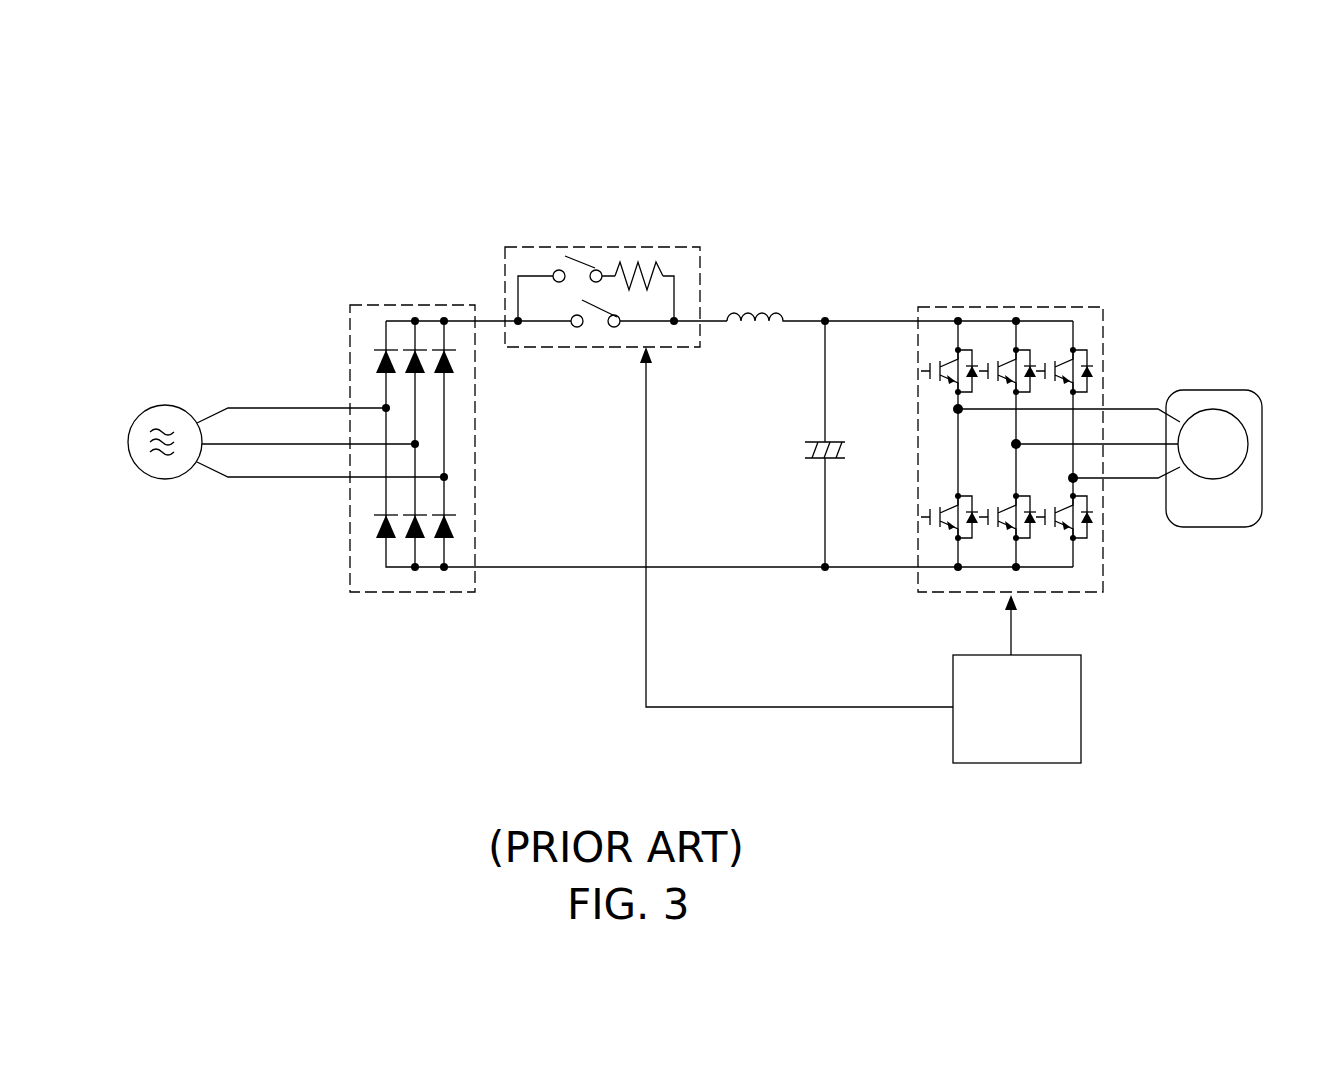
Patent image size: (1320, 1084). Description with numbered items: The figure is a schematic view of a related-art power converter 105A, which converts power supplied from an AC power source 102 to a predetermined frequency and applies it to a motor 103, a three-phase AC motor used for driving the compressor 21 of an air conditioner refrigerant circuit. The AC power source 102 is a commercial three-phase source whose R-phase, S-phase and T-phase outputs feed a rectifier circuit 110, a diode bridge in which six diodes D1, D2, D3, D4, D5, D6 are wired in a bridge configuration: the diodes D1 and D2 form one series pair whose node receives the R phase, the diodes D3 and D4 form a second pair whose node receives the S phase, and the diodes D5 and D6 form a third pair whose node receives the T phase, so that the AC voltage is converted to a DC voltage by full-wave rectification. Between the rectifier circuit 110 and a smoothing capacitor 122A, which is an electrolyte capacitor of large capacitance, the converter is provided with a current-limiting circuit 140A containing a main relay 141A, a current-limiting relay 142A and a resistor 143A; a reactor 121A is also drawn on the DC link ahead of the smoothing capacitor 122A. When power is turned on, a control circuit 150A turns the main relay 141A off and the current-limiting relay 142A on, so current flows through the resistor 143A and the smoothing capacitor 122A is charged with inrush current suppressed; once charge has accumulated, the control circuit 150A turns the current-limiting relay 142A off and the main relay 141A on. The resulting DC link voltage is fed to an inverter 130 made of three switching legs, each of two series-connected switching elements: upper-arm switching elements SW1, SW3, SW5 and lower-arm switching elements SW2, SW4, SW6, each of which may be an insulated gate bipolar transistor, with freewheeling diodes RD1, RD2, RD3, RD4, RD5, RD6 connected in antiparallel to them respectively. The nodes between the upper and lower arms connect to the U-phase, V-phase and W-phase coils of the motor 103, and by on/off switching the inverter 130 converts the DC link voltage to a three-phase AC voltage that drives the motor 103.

The power converter 105A is at (1147, 167).
The AC power source 102 is at (165, 472).
The rectifier circuit 110 is at (703, 424).
The diode D1 is at (388, 356).
The diode D2 is at (379, 540).
The diode D3 is at (414, 356).
The diode D4 is at (406, 540).
The diode D5 is at (452, 354).
The diode D6 is at (438, 540).
The current-limiting circuit 140A is at (616, 297).
The main relay 141A is at (598, 328).
The current-limiting relay 142A is at (585, 258).
The resistor 143A is at (655, 263).
The reactor (inductor) 121A is at (728, 335).
The smoothing capacitor 122A is at (810, 462).
The inverter 130 is at (1013, 433).
The switching element SW1 is at (929, 368).
The switching element SW2 is at (929, 518).
The switching element SW3 is at (987, 368).
The switching element SW4 is at (988, 510).
The switching element SW5 is at (1044, 368).
The switching element SW6 is at (1056, 518).
The freewheeling diode RD1 is at (974, 365).
The freewheeling diode RD2 is at (972, 517).
The freewheeling diode RD3 is at (1032, 365).
The freewheeling diode RD4 is at (1033, 517).
The freewheeling diode RD5 is at (1089, 365).
The freewheeling diode RD6 is at (1087, 517).
The compressor 21 is at (1225, 400).
The motor 103 is at (1225, 465).
The control circuit 150A is at (1025, 745).